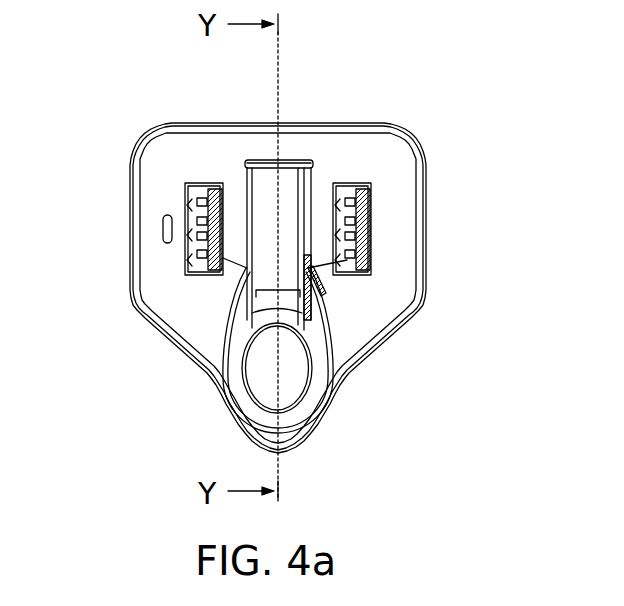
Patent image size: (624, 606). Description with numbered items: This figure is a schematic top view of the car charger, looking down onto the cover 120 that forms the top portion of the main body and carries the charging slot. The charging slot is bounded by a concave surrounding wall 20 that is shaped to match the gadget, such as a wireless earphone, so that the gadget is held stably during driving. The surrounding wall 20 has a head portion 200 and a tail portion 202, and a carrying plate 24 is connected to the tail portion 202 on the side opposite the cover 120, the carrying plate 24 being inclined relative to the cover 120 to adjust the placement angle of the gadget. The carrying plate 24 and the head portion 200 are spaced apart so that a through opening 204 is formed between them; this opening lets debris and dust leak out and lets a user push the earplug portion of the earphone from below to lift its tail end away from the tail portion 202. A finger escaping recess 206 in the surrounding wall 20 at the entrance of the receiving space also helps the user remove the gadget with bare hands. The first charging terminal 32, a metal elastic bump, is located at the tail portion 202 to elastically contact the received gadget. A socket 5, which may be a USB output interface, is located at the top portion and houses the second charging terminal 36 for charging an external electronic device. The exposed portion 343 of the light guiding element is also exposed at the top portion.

The surrounding wall 20 is at (244, 158).
The carrying plate 24 is at (262, 204).
The first charging terminal 32 is at (306, 162).
The socket 5 is at (372, 183).
The cover 120 is at (428, 174).
The second charging terminal 36 is at (368, 197).
The finger escaping recess 206 is at (372, 270).
The exposed portion 343 is at (163, 228).
The tail portion 202 is at (203, 261).
The head portion 200 is at (222, 402).
The through opening 204 is at (290, 392).